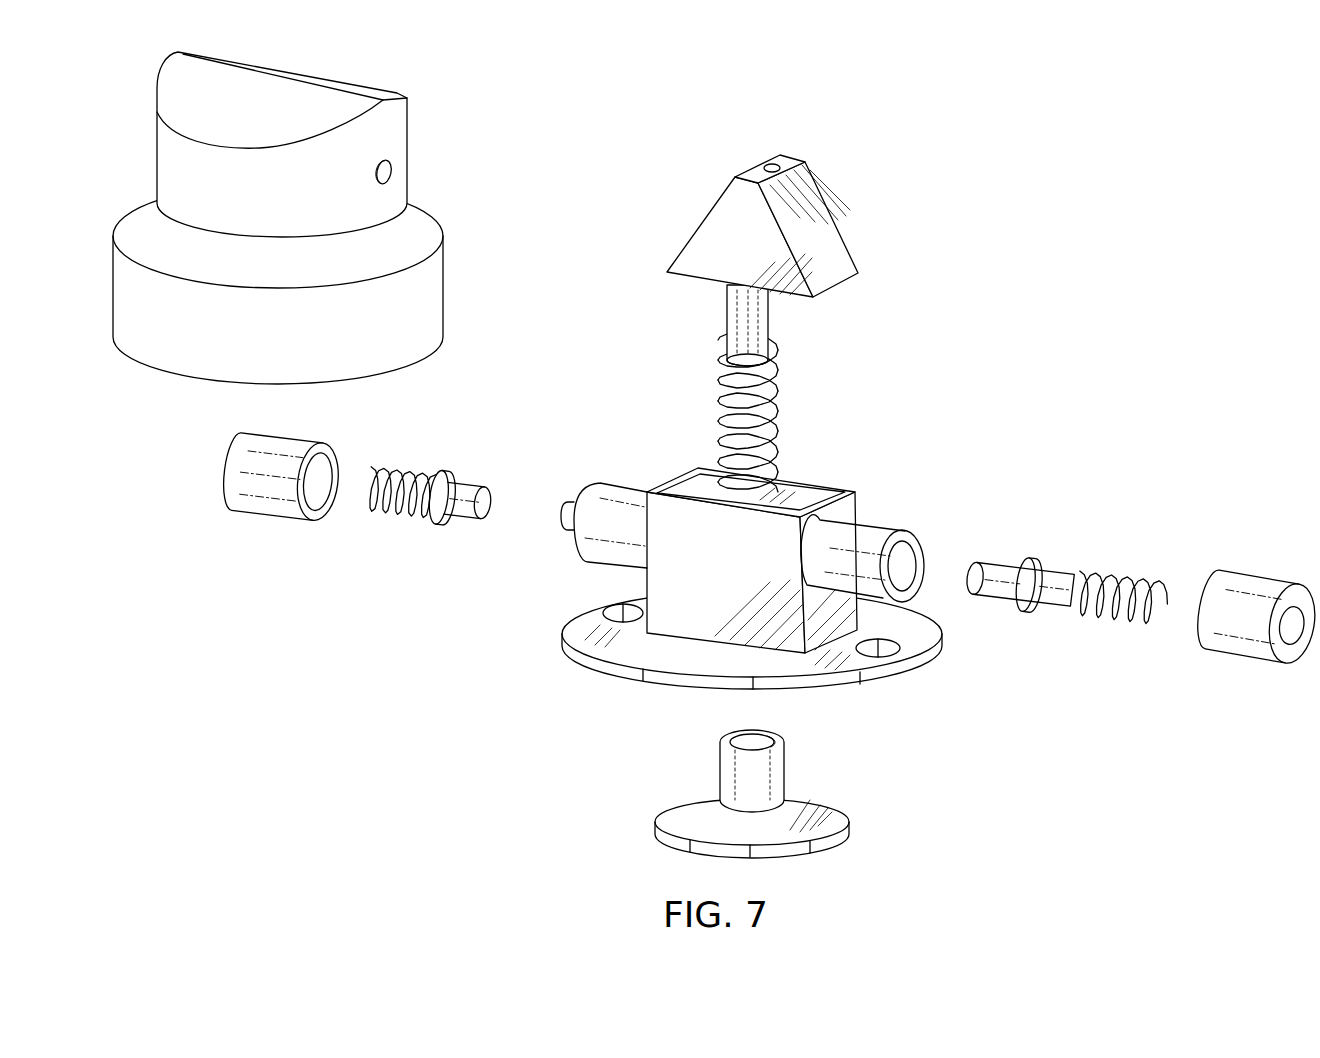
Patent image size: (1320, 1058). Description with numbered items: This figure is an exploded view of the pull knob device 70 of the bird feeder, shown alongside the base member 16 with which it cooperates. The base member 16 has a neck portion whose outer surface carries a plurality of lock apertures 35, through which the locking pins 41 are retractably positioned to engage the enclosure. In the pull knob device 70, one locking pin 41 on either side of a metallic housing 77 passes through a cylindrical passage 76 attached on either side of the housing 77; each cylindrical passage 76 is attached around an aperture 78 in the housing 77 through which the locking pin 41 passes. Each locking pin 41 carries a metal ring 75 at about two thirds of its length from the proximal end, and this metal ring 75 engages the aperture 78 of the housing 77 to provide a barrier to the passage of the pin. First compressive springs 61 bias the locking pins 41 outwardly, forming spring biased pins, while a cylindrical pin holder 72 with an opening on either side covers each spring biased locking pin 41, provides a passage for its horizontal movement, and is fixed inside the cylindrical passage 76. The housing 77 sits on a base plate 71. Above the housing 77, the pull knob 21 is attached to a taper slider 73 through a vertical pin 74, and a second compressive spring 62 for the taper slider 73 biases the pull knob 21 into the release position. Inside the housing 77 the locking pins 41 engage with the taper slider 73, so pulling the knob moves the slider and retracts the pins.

The base member 16 is at (138, 74).
The lock aperture 35 is at (392, 171).
The valve assembly 70 is at (985, 185).
The base plate 71 is at (610, 678).
The cylindrical pin holder 72 is at (245, 510).
The taper slider 73 is at (862, 222).
The vertical pin 74 is at (727, 318).
The metal ring 75 is at (1030, 562).
The cylindrical passage 76 is at (877, 532).
The housing 77 is at (657, 575).
The aperture 78 is at (823, 520).
The second compressive spring 62 is at (779, 400).
The first compressive spring 61 is at (405, 470).
The locking pin 41 is at (395, 512).
The pull knob 21 is at (655, 832).